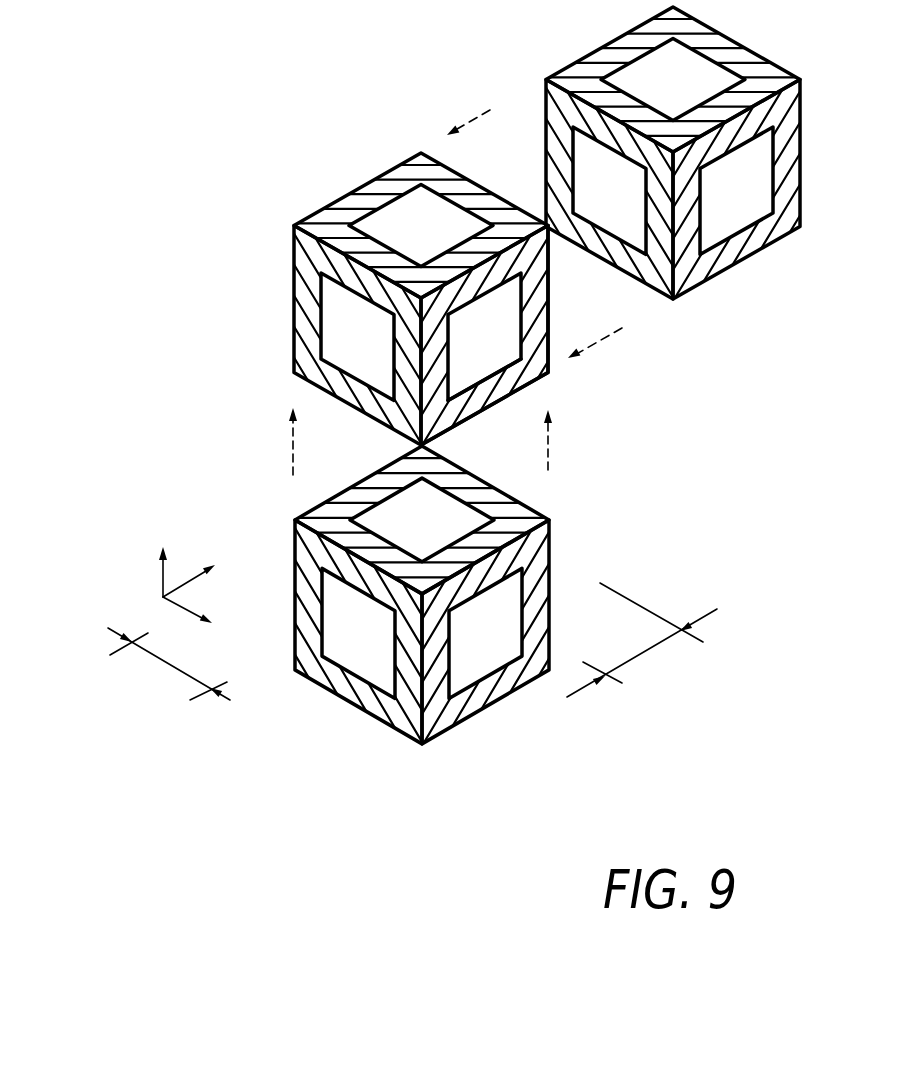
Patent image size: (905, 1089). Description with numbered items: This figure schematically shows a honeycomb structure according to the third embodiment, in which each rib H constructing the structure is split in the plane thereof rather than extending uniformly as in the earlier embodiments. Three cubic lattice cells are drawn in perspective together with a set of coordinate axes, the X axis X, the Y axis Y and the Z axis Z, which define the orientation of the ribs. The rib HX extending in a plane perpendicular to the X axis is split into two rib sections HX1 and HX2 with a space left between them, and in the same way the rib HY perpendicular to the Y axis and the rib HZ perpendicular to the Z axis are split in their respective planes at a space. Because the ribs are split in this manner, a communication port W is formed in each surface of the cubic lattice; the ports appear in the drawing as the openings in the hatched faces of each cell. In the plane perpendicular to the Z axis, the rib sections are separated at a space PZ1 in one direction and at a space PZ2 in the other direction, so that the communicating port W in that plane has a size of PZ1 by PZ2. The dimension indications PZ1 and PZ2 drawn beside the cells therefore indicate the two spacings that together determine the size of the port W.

The rib perpendicular to the Z axis HZ is at (345, 201).
The rib perpendicular to the Y axis HY is at (304, 330).
The rib section HX1 is at (437, 378).
The rib section HX2 is at (531, 309).
The rib H is at (479, 408).
The communication port W is at (497, 367).
The X axis X is at (357, 530).
The Y axis Y is at (197, 574).
The Z axis Z is at (166, 554).
The space PZ1 is at (169, 668).
The space PZ2 is at (642, 641).